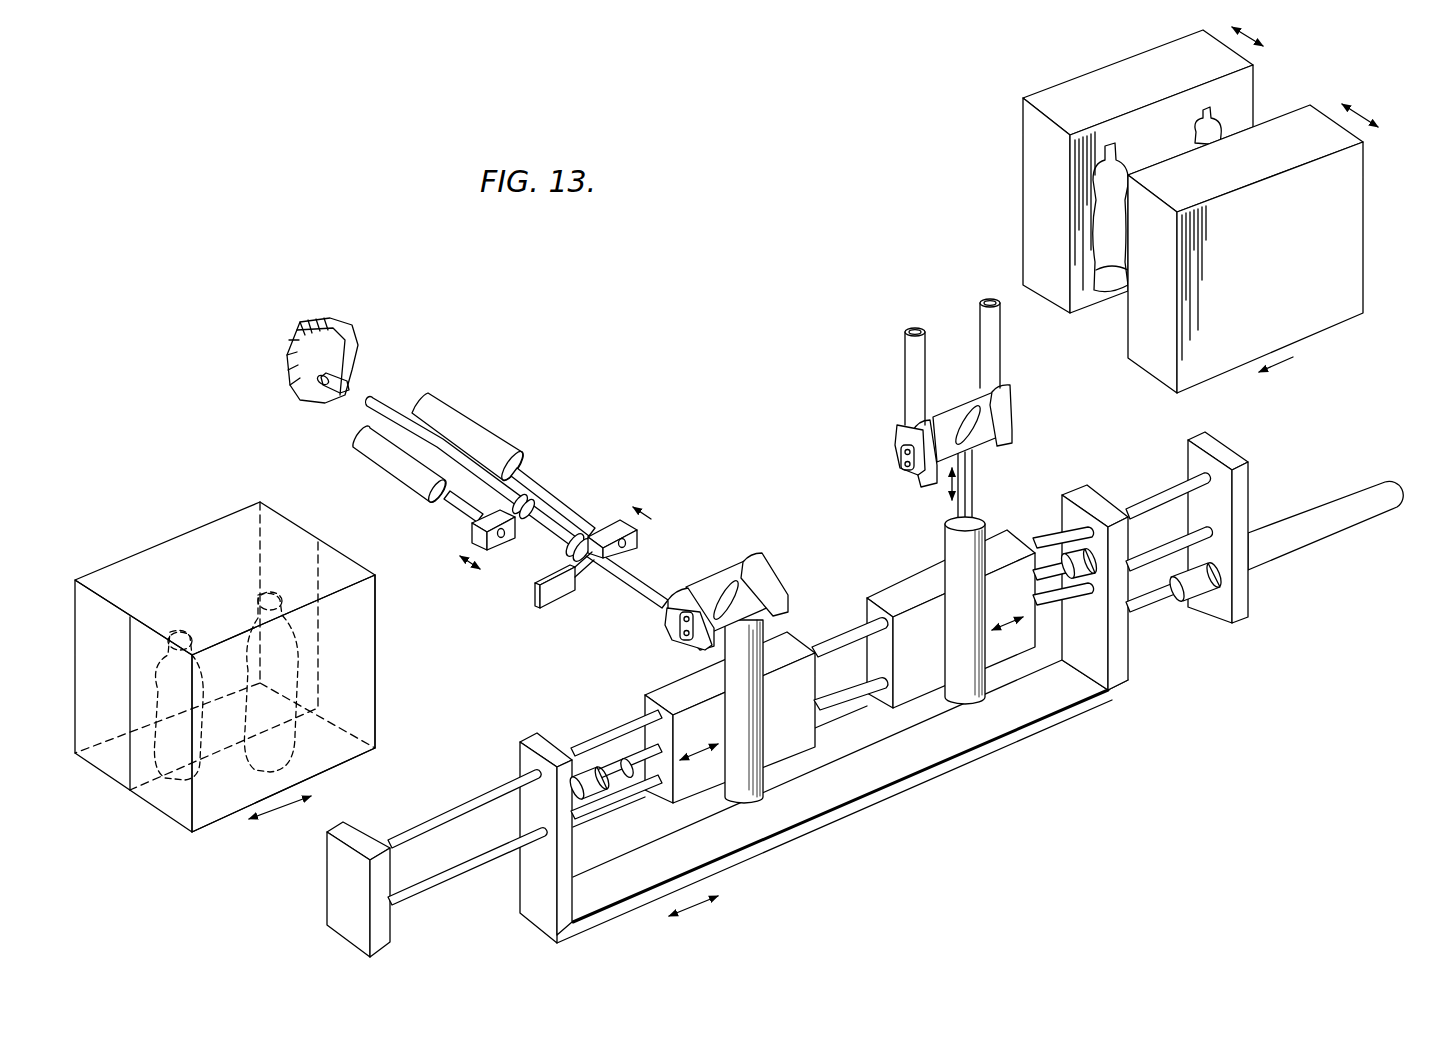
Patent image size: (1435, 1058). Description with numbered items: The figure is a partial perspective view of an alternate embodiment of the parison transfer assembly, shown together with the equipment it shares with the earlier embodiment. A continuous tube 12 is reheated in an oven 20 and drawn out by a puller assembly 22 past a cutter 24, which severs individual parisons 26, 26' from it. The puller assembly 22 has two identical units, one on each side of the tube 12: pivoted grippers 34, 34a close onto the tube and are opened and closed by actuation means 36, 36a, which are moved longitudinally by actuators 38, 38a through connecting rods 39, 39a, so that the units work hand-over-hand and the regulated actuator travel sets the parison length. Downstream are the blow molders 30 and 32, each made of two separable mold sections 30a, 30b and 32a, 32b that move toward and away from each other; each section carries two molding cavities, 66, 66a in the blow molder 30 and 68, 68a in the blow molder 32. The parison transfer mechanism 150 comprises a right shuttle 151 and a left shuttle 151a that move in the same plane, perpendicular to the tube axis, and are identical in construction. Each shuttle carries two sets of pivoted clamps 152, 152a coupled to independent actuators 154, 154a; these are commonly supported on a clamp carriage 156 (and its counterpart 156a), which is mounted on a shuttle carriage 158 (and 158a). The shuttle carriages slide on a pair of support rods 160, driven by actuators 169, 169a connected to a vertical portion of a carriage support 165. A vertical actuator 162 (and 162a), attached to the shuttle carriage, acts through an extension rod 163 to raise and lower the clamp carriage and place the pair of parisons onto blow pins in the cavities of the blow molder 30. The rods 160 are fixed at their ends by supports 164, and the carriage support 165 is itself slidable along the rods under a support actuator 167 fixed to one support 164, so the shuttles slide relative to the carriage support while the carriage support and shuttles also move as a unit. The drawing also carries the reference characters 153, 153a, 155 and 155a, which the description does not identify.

The tube 12 is at (335, 390).
The oven 20 is at (343, 343).
The puller assembly 22 is at (584, 378).
The cutter 24 is at (548, 600).
The parison 26 is at (971, 327).
The parison 26' is at (888, 366).
The blow molder 30 is at (1212, 212).
The mold section 30a is at (1170, 171).
The mold section 30b is at (1245, 249).
The blow molder 32 is at (255, 658).
The mold section 32a is at (224, 666).
The mold section 32b is at (368, 640).
The pivoted grippers 34 is at (578, 540).
The pivoted grippers 34a is at (525, 520).
The actuation means 36 is at (613, 520).
The actuation means 36a is at (473, 538).
The actuator 38 is at (480, 437).
The actuator 38a is at (395, 470).
The connecting rod 39 is at (540, 480).
The connecting rod 39a is at (453, 508).
The molding cavity 66 is at (1103, 170).
The molding cavity 66a is at (1210, 110).
The molding cavity 68 is at (153, 667).
The molding cavity 68a is at (267, 772).
The parison transfer mechanism 150 is at (936, 814).
The right shuttle 151 is at (835, 714).
The left shuttle 151a is at (775, 862).
The pivoted clamps 152 is at (1012, 403).
The pivoted clamps 152a is at (897, 442).
The clamp jaw 153 is at (763, 557).
The clamp jaw 153a is at (668, 632).
The actuator 154 is at (963, 390).
The actuator 154a is at (937, 412).
The clamp cylinder 155 is at (735, 575).
The clamp cylinder end 155a is at (703, 583).
The clamp carriage 156 is at (940, 475).
The clamp carriage 156a is at (783, 623).
The shuttle carriage 158 is at (910, 582).
The shuttle carriage 158a is at (793, 742).
The support rods 160 is at (400, 832).
The vertical actuator 162 is at (982, 695).
The vertical actuator 162a is at (762, 795).
The extension rod 163 is at (973, 477).
The supports 164 is at (1240, 485).
The carriage support 165 is at (958, 756).
The support actuator 167 is at (1198, 583).
The actuator 169 is at (1087, 577).
The actuator 169a is at (597, 775).